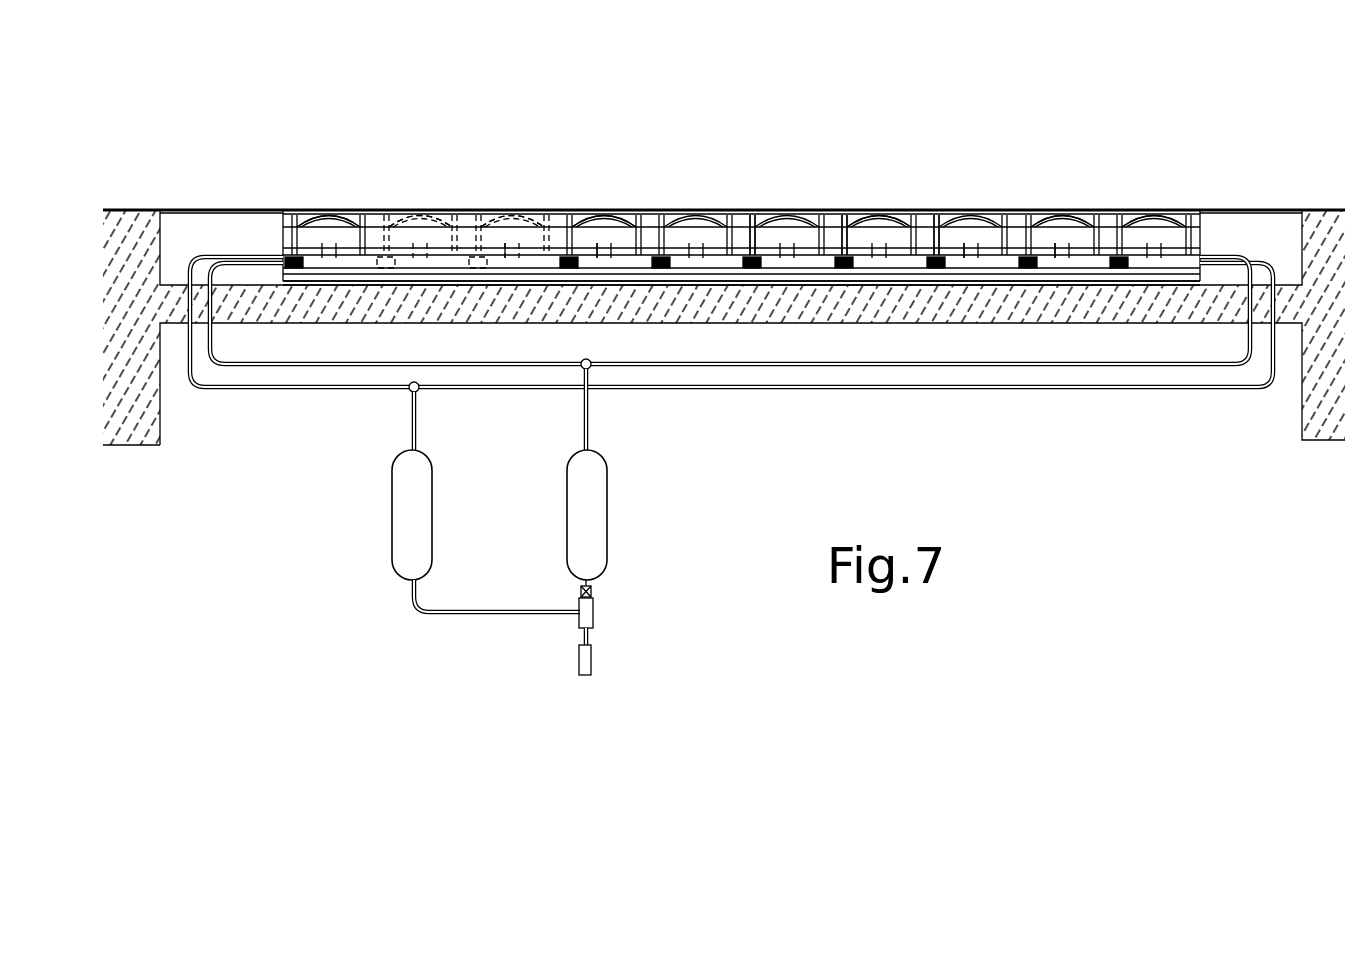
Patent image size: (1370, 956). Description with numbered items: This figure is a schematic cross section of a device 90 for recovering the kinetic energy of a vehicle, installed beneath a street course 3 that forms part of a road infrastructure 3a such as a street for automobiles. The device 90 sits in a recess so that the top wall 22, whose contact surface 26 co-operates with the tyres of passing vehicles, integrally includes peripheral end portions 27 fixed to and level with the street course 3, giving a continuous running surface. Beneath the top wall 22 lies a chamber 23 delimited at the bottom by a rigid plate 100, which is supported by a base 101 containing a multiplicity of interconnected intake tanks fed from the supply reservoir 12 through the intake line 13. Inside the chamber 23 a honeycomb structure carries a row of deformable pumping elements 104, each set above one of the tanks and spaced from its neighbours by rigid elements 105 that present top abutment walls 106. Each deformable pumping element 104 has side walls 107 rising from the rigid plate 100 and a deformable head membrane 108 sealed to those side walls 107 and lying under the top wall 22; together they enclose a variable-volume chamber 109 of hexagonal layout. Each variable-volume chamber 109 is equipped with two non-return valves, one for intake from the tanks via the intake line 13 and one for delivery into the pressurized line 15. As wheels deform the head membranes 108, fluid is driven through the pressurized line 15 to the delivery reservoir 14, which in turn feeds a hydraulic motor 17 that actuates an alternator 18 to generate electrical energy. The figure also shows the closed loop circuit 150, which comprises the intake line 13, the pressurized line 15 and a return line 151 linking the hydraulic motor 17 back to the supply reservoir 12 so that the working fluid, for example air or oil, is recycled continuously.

The device 90 is at (712, 130).
The street course 3 is at (143, 200).
The road infrastructure 3a is at (123, 193).
The peripheral end portions 27 is at (188, 208).
The deformable pumping elements 104 is at (305, 223).
The contact surface 26 is at (380, 208).
The top wall 22 is at (470, 212).
The variable-volume chamber 109 is at (520, 212).
The chamber 23 is at (655, 212).
The deformable head membrane 108 is at (722, 212).
The top abutment walls 106 is at (832, 236).
The rigid elements 105 is at (848, 212).
The side walls 107 is at (925, 240).
The base 101 is at (277, 273).
The rigid plate 100 is at (312, 290).
The pressurized line 15 is at (520, 364).
The intake line 13 is at (272, 390).
The supply reservoir 12 is at (400, 498).
The delivery reservoir 14 is at (590, 510).
The hydraulic motor 17 is at (593, 614).
The alternator 18 is at (591, 665).
The return line 151 is at (502, 620).
The closed loop circuit 150 is at (402, 622).